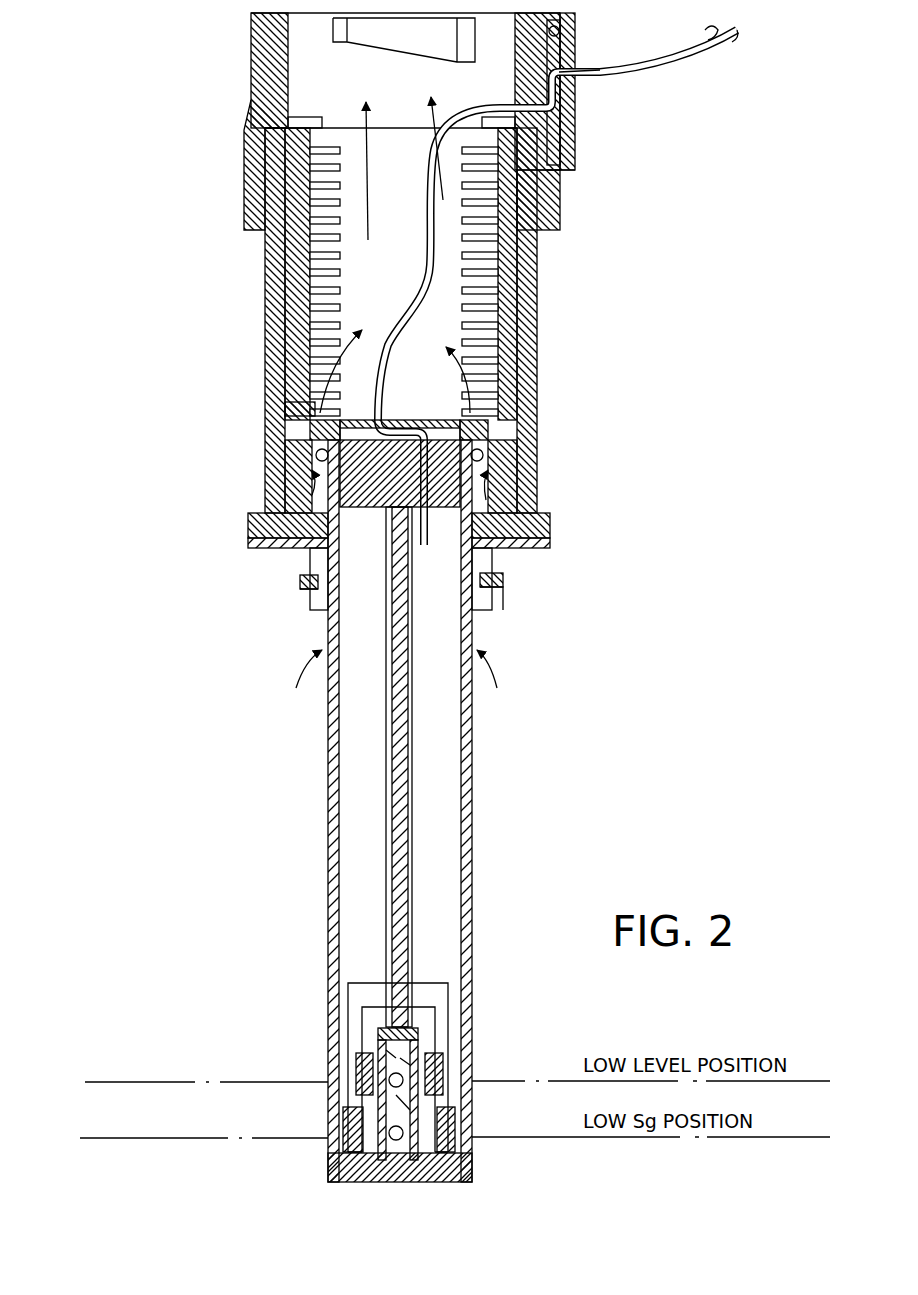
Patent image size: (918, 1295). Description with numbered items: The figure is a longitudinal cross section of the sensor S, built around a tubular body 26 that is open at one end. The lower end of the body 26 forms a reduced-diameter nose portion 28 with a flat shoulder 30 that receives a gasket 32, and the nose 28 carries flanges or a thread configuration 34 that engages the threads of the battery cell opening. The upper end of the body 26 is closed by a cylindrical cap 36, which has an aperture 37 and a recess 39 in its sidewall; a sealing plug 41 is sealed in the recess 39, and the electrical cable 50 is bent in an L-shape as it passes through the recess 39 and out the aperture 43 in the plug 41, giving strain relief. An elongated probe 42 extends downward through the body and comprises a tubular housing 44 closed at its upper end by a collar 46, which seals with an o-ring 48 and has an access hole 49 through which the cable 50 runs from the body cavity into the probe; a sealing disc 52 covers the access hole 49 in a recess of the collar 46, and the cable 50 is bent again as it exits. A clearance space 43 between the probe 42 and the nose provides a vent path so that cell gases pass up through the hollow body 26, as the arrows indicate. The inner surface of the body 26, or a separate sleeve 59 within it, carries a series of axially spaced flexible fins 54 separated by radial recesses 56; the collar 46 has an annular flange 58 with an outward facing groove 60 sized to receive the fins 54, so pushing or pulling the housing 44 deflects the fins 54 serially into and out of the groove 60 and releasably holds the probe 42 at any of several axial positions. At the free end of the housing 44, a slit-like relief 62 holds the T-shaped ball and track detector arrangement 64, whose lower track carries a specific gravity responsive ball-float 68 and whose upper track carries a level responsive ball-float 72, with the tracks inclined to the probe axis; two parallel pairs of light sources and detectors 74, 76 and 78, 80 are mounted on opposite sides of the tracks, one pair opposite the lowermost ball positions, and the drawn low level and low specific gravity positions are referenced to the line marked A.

The tubular body 26 is at (540, 340).
The nose portion 28 is at (494, 560).
The flat shoulder 30 is at (548, 532).
The gasket 32 is at (490, 546).
The thread configuration 34 is at (504, 585).
The cylindrical cap 36 is at (258, 52).
The aperture 37 is at (572, 118).
The recess 39 is at (560, 36).
The sealing plug 41 is at (574, 95).
The aperture 43 is at (584, 71).
The tubular housing 44 is at (473, 867).
The collar 46 is at (372, 510).
The o-ring 48 is at (528, 455).
The access hole 49 is at (484, 470).
The electrical cable 50 is at (682, 58).
The sealing disc 52 is at (430, 424).
The flexible fins 54 is at (300, 273).
The radial recesses 56 is at (296, 288).
The annular flange 58 is at (300, 404).
The sleeve 59 is at (292, 481).
The groove 60 is at (318, 432).
The slit-like relief 62 is at (380, 1035).
The ball and track detector arrangement 64 is at (330, 1168).
The specific gravity responsive ball-float 68 is at (402, 1135).
The level responsive ball-float 72 is at (400, 1078).
The light source 74 is at (350, 1123).
The light detector 76 is at (450, 1124).
The light source 78 is at (360, 1070).
The light detector 80 is at (438, 1072).
The elongated probe 42 is at (490, 828).
The sensor S is at (730, 188).
The axis A is at (112, 1101).